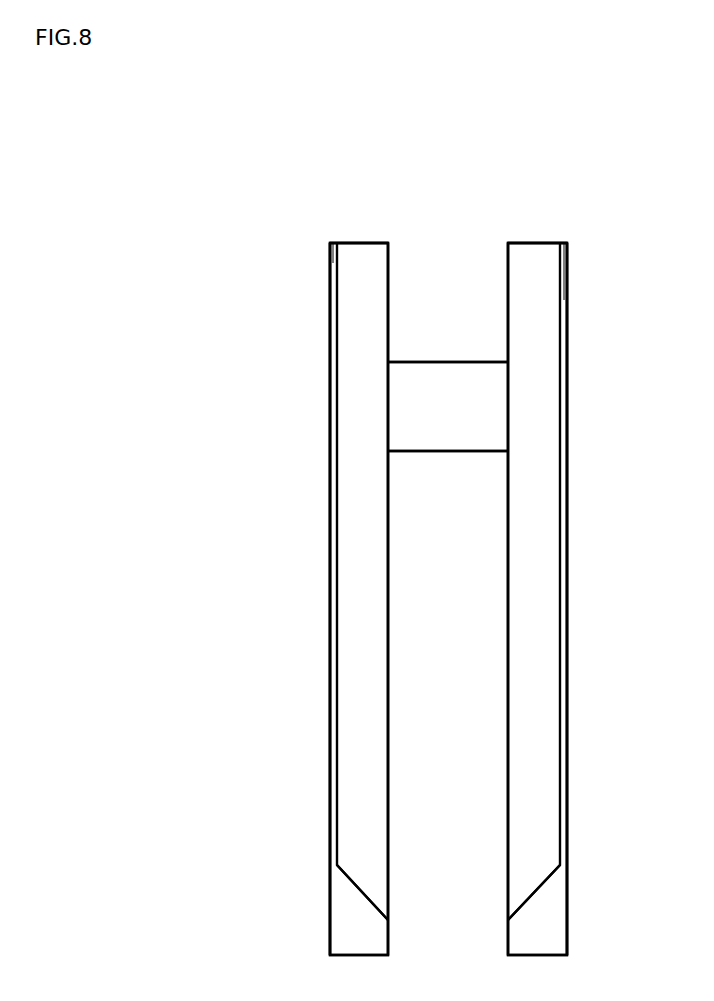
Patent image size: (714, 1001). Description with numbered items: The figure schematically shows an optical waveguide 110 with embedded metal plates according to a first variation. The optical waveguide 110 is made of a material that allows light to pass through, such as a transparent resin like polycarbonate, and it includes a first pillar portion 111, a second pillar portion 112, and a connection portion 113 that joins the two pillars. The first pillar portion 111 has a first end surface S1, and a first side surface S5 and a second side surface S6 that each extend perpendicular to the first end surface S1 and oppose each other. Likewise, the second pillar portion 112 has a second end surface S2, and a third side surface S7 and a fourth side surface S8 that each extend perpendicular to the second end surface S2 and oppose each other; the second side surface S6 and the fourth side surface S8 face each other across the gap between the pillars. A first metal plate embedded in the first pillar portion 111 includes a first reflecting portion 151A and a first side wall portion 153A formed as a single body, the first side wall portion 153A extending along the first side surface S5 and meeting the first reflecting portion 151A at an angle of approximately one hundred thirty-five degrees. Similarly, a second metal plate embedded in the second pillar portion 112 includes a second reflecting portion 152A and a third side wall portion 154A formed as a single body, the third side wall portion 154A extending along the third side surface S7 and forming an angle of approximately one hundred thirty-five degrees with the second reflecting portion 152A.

The optical waveguide 110 is at (578, 717).
The first pillar portion 111 is at (543, 432).
The second pillar portion 112 is at (355, 580).
The connection portion 113 is at (415, 453).
The first side wall portion 153A is at (556, 388).
The third side wall portion 154A is at (337, 506).
The first reflecting portion 151A is at (543, 882).
The second reflecting portion 152A is at (357, 882).
The first end surface S1 is at (534, 243).
The second end surface S2 is at (366, 243).
The first side surface S5 is at (567, 570).
The second side surface S6 is at (507, 582).
The third side surface S7 is at (330, 720).
The fourth side surface S8 is at (390, 665).